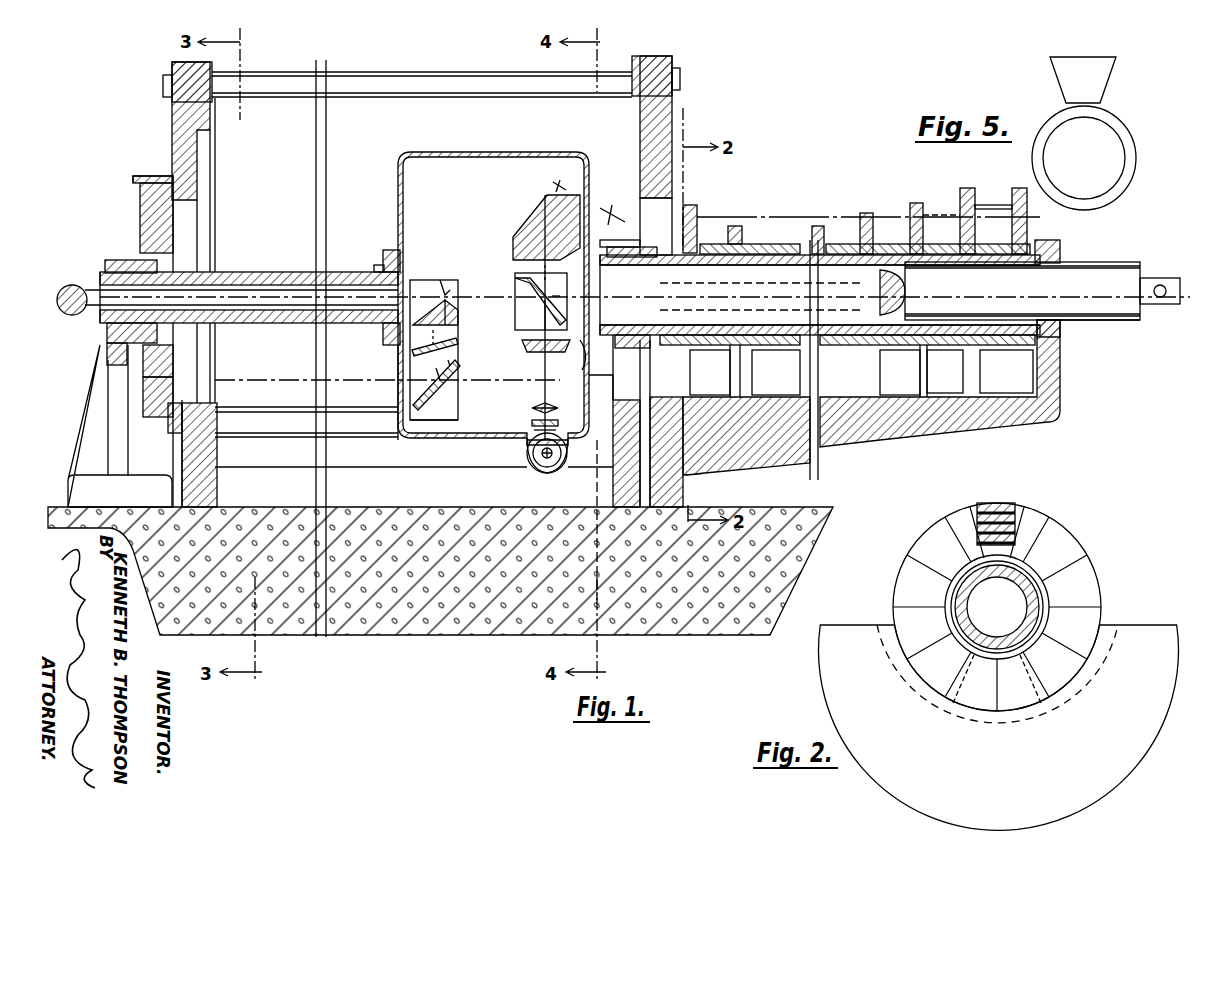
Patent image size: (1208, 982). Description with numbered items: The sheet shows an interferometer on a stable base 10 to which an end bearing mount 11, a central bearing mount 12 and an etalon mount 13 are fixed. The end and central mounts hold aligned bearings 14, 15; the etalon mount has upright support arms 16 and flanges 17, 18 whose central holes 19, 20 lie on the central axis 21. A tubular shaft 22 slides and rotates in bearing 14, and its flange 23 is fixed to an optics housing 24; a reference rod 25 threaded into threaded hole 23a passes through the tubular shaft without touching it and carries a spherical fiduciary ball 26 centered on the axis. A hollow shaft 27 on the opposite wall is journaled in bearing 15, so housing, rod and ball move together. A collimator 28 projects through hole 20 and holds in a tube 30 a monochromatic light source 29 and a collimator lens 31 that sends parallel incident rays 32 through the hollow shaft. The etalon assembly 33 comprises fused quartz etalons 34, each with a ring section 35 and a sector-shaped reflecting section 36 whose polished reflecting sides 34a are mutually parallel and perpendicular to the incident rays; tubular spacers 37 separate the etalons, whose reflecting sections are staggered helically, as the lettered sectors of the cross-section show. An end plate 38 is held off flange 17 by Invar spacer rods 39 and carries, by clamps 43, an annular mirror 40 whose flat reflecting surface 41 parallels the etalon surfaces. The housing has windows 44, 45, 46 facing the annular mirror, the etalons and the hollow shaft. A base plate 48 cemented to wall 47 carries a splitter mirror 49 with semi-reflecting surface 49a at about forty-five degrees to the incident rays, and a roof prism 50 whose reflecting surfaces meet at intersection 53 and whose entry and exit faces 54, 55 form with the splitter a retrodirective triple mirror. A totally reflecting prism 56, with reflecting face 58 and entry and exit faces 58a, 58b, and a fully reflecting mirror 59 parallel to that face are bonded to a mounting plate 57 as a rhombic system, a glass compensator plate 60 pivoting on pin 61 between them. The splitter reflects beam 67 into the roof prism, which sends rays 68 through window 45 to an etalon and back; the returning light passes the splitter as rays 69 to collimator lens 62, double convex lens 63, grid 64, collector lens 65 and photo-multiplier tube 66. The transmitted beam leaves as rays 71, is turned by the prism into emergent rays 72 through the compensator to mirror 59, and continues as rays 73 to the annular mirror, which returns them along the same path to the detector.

In FIG. 1, the base 10 is at (770, 590).
In FIG. 1, the end bearing mount 11 is at (80, 454).
In FIG. 1, the central bearing mount 12 is at (610, 486).
In FIG. 1, the etalon mount 13 is at (1062, 410).
In FIG. 1, the bearing 14 is at (122, 260).
In FIG. 1, the bearing 15 is at (645, 252).
In FIG. 1, the upright support arms 16 is at (736, 360).
In FIG. 2, the upright support arms 16 is at (1132, 707).
In FIG. 1, the flange 17 is at (675, 118).
In FIG. 1, the flange 18 is at (1062, 248).
In FIG. 1, the central hole 19 is at (690, 208).
In FIG. 1, the central hole 20 is at (1066, 322).
In FIG. 1, the central axis 21 is at (58, 306).
In FIG. 1, the tubular shaft 22 is at (252, 272).
In FIG. 1, the flange 23 is at (386, 250).
In FIG. 1, the threaded hole 23a is at (380, 268).
In FIG. 1, the optics housing 24 is at (422, 153).
In FIG. 1, the reference rod 25 is at (84, 290).
In FIG. 1, the fiduciary ball 26 is at (60, 320).
In FIG. 1, the hollow shaft 27 is at (668, 340).
In FIG. 2, the hollow shaft 27 is at (1020, 608).
In FIG. 1, the collimator 28 is at (1158, 306).
In FIG. 1, the light source 29 is at (1162, 284).
In FIG. 1, the tube 30 is at (1096, 262).
In FIG. 1, the collimator lens 31 is at (880, 300).
In FIG. 1, the incident rays 32 is at (748, 294).
In FIG. 1, the etalon assembly 33 is at (886, 234).
In FIG. 2, the etalon assembly 33 is at (1092, 532).
In FIG. 1, the etalons 34 is at (1018, 186).
In FIG. 5, the etalons 34 is at (1128, 128).
In FIG. 2, the etalons 34 is at (1005, 500).
In FIG. 1, the reflecting sides 34a is at (946, 194).
In FIG. 5, the reflecting sides 34a is at (1075, 81).
In FIG. 1, the ring section 35 is at (830, 350).
In FIG. 5, the ring section 35 is at (1123, 174).
In FIG. 5, the reflecting section 36 is at (1108, 72).
In FIG. 1, the tubular spacers 37 is at (762, 248).
In FIG. 1, the end plate 38 is at (172, 125).
In FIG. 1, the spacer rods 39 is at (400, 72).
In FIG. 1, the annular mirror 40 is at (140, 215).
In FIG. 1, the reflecting surface 41 is at (176, 216).
In FIG. 1, the clamps 43 is at (135, 178).
In FIG. 1, the window 44 is at (398, 394).
In FIG. 1, the window 45 is at (590, 200).
In FIG. 1, the window 46 is at (602, 332).
In FIG. 1, the wall 47 is at (447, 174).
In FIG. 1, the base plate 48 is at (518, 222).
In FIG. 1, the splitter mirror 49 is at (515, 292).
In FIG. 1, the semi-reflecting surface 49a is at (518, 276).
In FIG. 1, the roof prism 50 is at (538, 215).
In FIG. 1, the intersection 53 is at (552, 186).
In FIG. 1, the entry face 54 is at (550, 272).
In FIG. 1, the exit face 55 is at (595, 236).
In FIG. 1, the totally reflecting prism 56 is at (436, 280).
In FIG. 1, the mounting plate 57 is at (458, 396).
In FIG. 1, the reflecting face 58 is at (434, 350).
In FIG. 1, the entry face 58a is at (460, 316).
In FIG. 1, the exit face 58b is at (458, 342).
In FIG. 1, the fully reflecting mirror 59 is at (462, 372).
In FIG. 1, the compensator plate 60 is at (385, 343).
In FIG. 1, the pin 61 is at (426, 373).
In FIG. 1, the collimator lens 62 is at (545, 355).
In FIG. 1, the double convex lens 63 is at (530, 410).
In FIG. 1, the grid 64 is at (556, 422).
In FIG. 1, the collector lens 65 is at (527, 442).
In FIG. 1, the photo-sensitive tube 66 is at (528, 460).
In FIG. 1, the reflected beam 67 is at (564, 287).
In FIG. 1, the rays 68 is at (720, 217).
In FIG. 1, the rays 69 is at (577, 361).
In FIG. 1, the rays 71 is at (532, 315).
In FIG. 1, the emergent rays 72 is at (447, 357).
In FIG. 1, the rays 73 is at (276, 380).